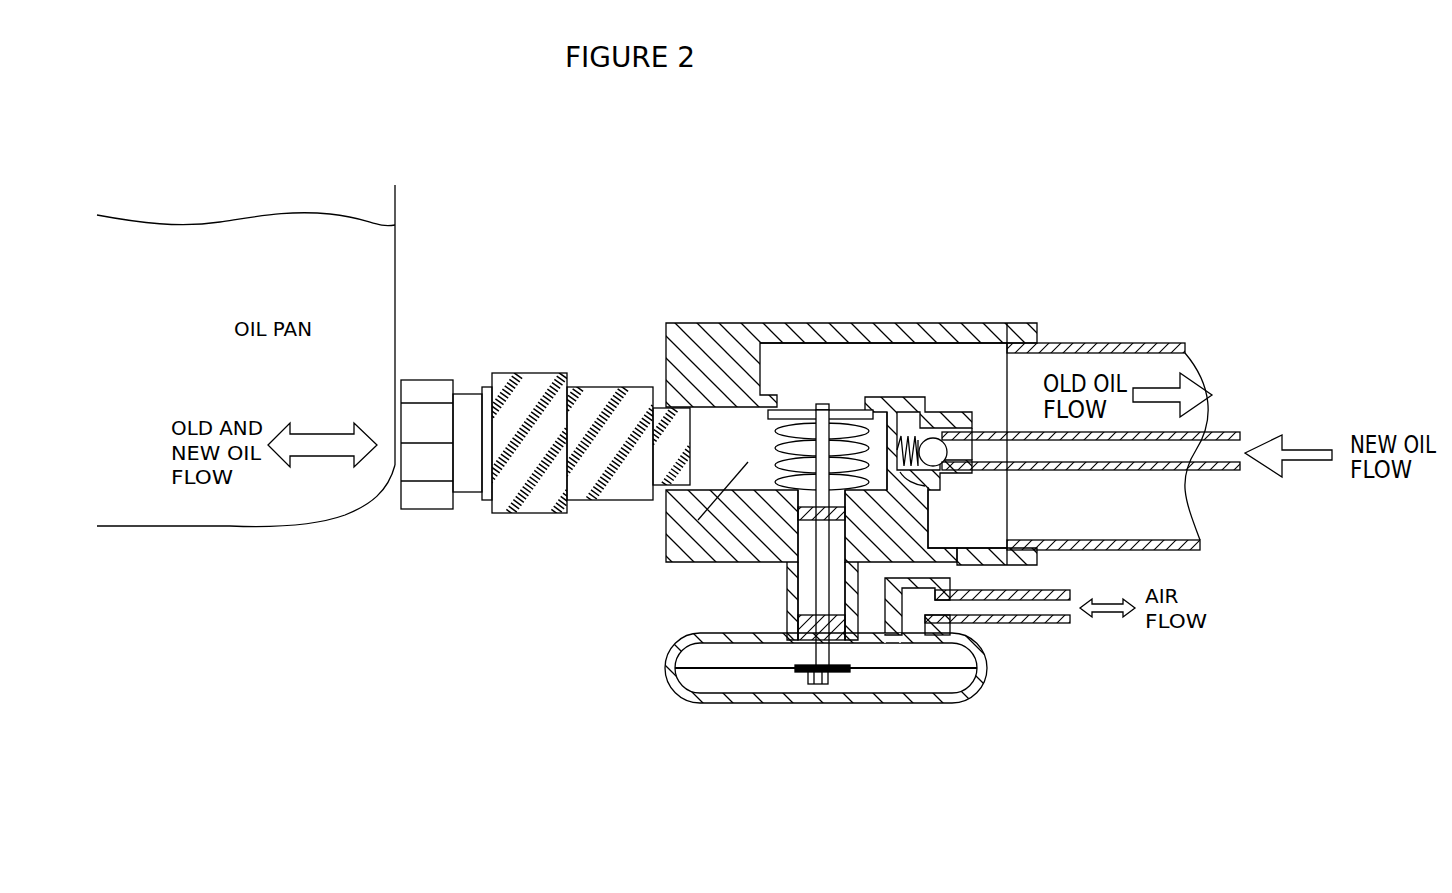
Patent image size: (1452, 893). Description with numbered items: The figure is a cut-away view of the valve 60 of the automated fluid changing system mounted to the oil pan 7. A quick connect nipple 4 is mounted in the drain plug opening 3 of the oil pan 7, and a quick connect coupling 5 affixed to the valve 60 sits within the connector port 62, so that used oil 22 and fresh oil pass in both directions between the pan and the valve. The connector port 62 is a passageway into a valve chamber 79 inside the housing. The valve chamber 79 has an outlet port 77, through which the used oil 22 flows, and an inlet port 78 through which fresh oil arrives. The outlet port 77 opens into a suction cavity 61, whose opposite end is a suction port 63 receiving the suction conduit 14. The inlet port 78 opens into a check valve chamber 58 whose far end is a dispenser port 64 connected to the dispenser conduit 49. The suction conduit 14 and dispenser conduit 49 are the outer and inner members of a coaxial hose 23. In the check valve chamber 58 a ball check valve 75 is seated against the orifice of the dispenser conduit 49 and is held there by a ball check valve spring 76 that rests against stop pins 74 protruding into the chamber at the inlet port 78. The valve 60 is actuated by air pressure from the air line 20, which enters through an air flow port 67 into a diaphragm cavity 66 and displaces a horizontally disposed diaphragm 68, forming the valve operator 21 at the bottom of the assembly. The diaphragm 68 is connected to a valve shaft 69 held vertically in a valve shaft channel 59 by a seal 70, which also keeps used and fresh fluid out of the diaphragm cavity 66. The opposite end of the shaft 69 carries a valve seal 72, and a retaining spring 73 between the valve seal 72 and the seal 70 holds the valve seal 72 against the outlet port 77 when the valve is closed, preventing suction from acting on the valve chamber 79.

The drain plug opening 3 is at (340, 497).
The quick connect nipple 4 is at (420, 378).
The quick connect coupling 5 is at (497, 373).
The oil pan 7 is at (395, 215).
The suction conduit 14 is at (1182, 370).
The air line 20 is at (1045, 623).
The valve operator 21 is at (770, 703).
The used oil 22 is at (222, 243).
The coaxial hose 23 is at (1125, 345).
The dispenser conduit 49 is at (1212, 447).
The check valve chamber 58 is at (993, 360).
The valve shaft channel 59 is at (790, 578).
The valve 60 is at (668, 323).
The suction cavity 61 is at (887, 357).
The connector port 62 is at (633, 487).
The suction port 63 is at (1027, 337).
The dispenser port 64 is at (973, 427).
The diaphragm cavity 66 is at (887, 657).
The air flow port 67 is at (917, 608).
The diaphragm 68 is at (933, 703).
The valve shaft 69 is at (812, 590).
The seal 70 is at (804, 517).
The valve seal 72 is at (785, 407).
The retaining spring 73 is at (775, 440).
The stop pins 74 is at (910, 490).
The ball check valve 75 is at (935, 455).
The ball check valve spring 76 is at (897, 473).
The outlet port 77 is at (880, 450).
The inlet port 78 is at (922, 433).
The valve chamber 79 is at (697, 453).